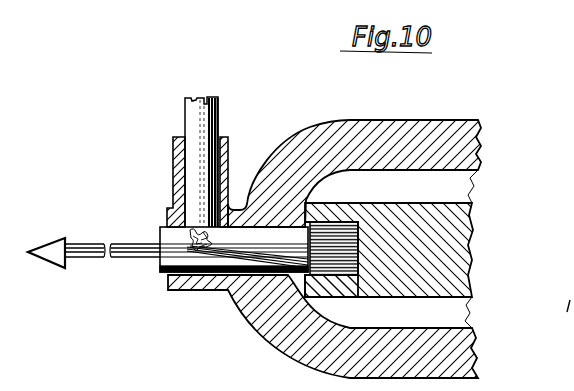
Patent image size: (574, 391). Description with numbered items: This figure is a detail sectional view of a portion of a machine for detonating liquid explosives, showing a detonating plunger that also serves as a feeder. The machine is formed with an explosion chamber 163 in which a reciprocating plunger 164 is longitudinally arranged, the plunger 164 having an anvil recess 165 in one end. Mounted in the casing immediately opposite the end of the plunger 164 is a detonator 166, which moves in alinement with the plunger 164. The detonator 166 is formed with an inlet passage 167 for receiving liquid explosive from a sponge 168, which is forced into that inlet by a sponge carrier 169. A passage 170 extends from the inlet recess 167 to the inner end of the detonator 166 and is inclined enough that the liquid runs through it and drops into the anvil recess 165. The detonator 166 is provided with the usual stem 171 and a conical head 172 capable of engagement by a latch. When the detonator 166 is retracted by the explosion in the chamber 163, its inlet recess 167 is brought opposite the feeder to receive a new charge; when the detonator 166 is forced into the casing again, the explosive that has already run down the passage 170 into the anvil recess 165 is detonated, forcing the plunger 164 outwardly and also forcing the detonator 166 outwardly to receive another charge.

The explosion chamber 163 is at (473, 173).
The reciprocating plunger 164 is at (466, 203).
The anvil recess 165 is at (337, 267).
The detonator 166 is at (163, 278).
The inlet passage 167 is at (167, 240).
The sponge 168 is at (195, 221).
The sponge carrier 169 is at (219, 122).
The passage 170 is at (245, 255).
The stem 171 is at (90, 258).
The conical head 172 is at (53, 260).